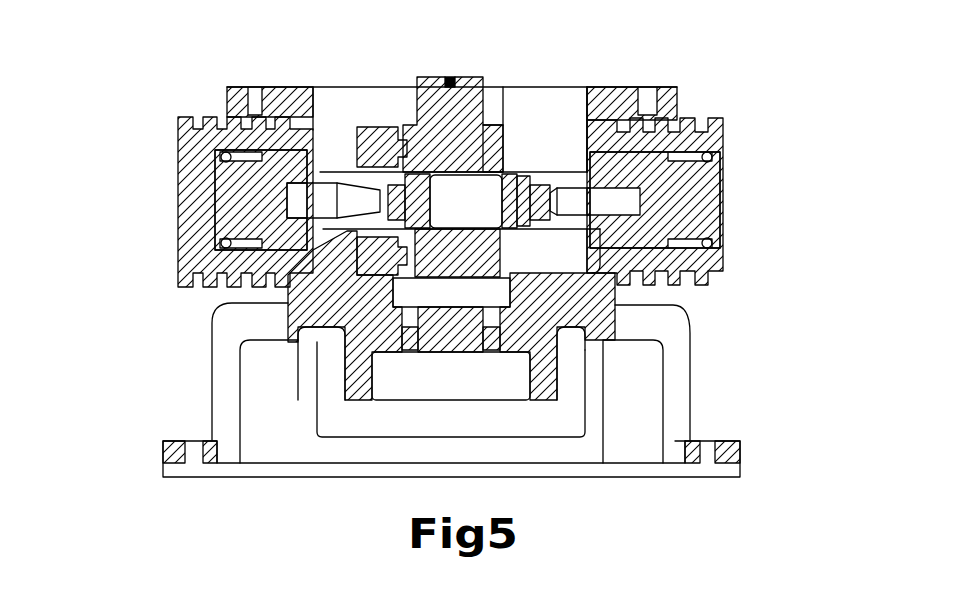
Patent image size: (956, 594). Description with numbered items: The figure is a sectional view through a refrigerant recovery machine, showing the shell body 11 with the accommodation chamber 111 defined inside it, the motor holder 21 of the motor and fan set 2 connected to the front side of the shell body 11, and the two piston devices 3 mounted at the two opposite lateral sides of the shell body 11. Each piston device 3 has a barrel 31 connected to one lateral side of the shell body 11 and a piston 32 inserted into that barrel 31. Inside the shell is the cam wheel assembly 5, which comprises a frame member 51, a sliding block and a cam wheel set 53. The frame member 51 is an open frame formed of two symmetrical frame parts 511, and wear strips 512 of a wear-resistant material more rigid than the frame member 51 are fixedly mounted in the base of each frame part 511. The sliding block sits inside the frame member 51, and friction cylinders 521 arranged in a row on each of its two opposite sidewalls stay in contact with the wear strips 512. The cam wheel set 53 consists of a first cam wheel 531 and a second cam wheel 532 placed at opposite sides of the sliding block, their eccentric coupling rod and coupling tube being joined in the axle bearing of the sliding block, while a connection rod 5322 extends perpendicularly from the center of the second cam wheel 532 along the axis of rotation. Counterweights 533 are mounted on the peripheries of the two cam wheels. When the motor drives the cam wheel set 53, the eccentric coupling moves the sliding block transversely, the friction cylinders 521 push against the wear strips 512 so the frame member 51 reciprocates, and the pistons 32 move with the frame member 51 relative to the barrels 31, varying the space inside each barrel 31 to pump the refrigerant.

The motor and fan set 2 is at (690, 402).
The motor holder 21 is at (688, 437).
The piston device 3 is at (183, 110).
The barrel 31 is at (713, 117).
The piston 32 is at (218, 190).
The cam wheel assembly 5 is at (377, 118).
The shell body 11 is at (657, 93).
The accommodation chamber 111 is at (575, 93).
The frame member 51 is at (345, 232).
The frame part 511 is at (378, 187).
The wear strip 512 is at (385, 207).
The friction cylinder 521 is at (345, 195).
The cam wheel set 53 is at (400, 327).
The first cam wheel 531 is at (500, 127).
The second cam wheel 532 is at (418, 320).
The counterweight 533 is at (358, 175).
The connection rod 5322 is at (440, 345).